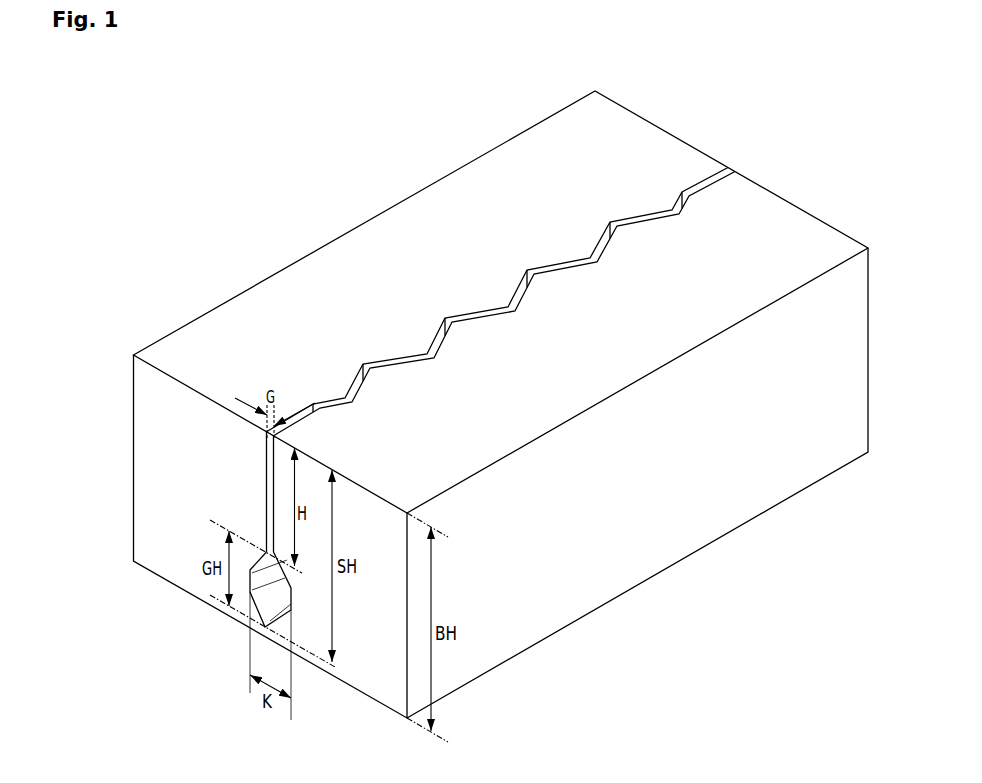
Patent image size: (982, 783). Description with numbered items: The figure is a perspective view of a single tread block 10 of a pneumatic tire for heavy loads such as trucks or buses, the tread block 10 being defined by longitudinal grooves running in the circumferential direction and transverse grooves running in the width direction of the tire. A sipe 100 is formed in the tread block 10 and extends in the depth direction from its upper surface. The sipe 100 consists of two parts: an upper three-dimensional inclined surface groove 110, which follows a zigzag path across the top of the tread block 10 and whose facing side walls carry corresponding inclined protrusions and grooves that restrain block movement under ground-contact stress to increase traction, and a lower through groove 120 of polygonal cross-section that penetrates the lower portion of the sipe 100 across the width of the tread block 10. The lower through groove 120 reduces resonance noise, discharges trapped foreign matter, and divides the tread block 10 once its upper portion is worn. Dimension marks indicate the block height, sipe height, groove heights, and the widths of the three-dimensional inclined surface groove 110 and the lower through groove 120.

The tread block 10 is at (405, 196).
The sipe 100 is at (707, 178).
The three-dimensional inclined surface groove 110 is at (268, 483).
The lower through groove 120 is at (268, 598).